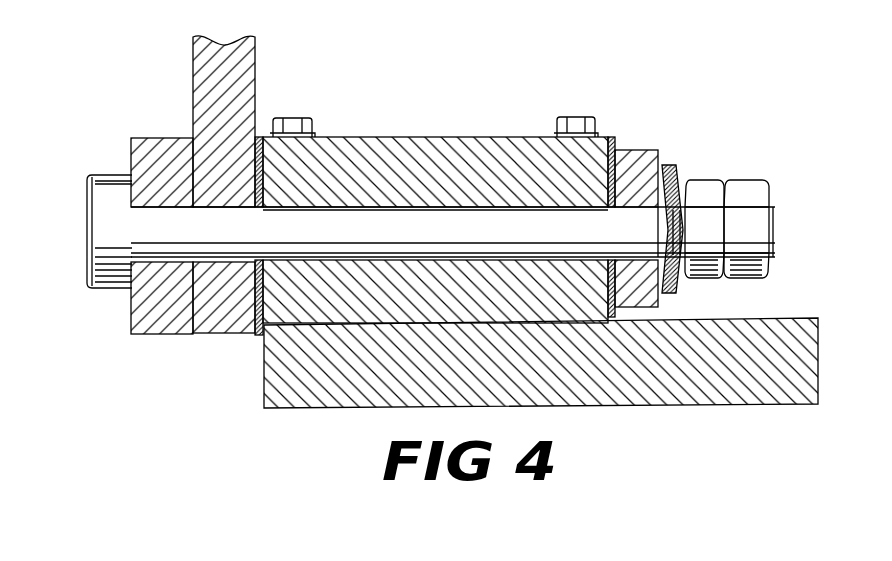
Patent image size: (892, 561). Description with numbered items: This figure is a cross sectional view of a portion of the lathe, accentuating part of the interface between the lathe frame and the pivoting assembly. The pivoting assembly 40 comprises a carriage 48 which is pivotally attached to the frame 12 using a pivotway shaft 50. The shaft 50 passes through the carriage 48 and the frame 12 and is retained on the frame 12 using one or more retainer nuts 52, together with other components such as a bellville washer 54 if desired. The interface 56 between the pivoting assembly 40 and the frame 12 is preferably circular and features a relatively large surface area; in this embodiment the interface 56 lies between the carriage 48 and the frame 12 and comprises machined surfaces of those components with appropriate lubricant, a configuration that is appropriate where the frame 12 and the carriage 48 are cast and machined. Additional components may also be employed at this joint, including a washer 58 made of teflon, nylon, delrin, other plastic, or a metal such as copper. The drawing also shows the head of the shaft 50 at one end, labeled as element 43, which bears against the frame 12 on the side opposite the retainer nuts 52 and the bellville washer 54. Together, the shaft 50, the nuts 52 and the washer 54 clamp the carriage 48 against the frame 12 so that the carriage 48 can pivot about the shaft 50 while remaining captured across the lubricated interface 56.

The frame 12 is at (387, 142).
The pivoting assembly 40 is at (211, 184).
The bolt head 43 is at (86, 243).
The carriage 48 is at (238, 72).
The pivotway shaft 50 is at (447, 240).
The retainer nuts 52 is at (745, 185).
The bellville washer 54 is at (672, 170).
The interface 56 is at (262, 135).
The washer 58 is at (257, 336).